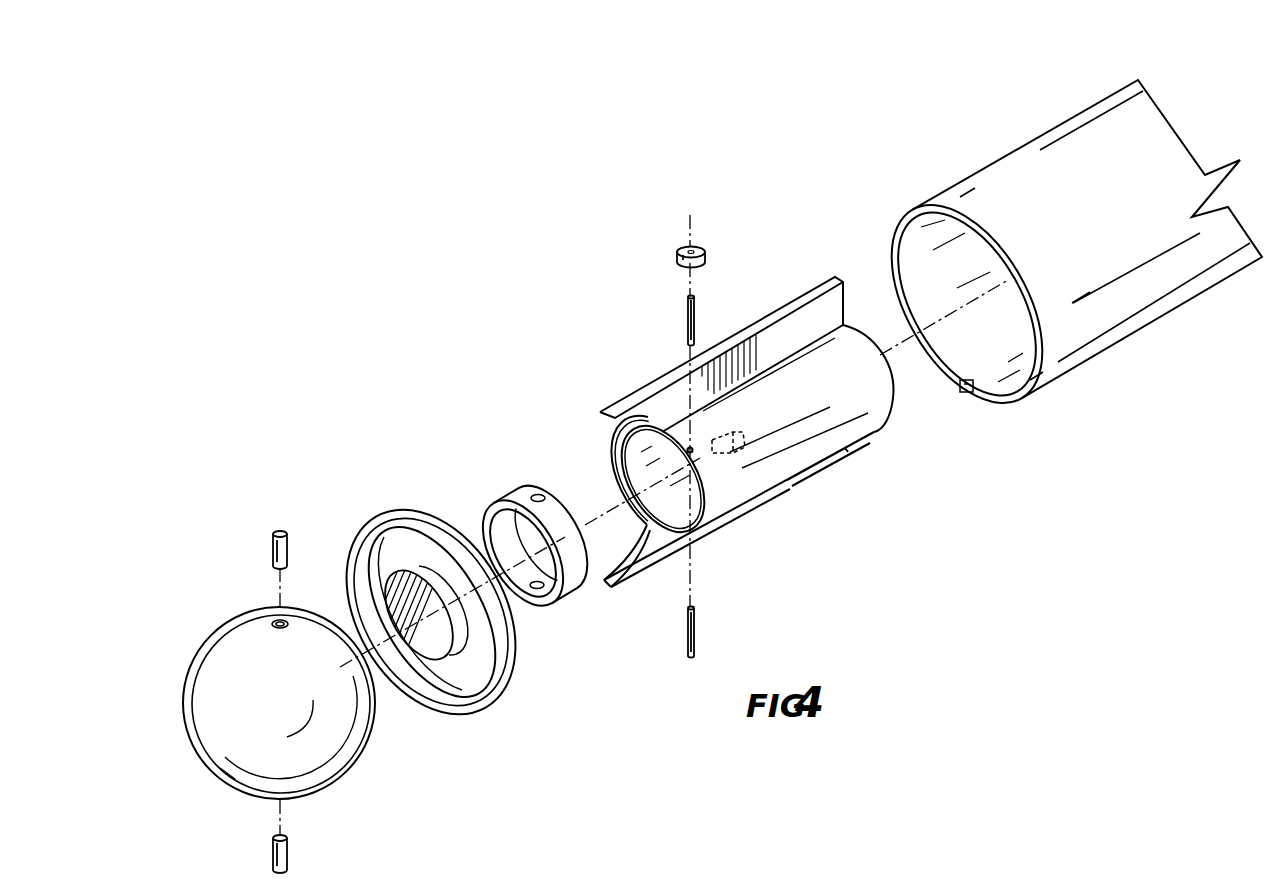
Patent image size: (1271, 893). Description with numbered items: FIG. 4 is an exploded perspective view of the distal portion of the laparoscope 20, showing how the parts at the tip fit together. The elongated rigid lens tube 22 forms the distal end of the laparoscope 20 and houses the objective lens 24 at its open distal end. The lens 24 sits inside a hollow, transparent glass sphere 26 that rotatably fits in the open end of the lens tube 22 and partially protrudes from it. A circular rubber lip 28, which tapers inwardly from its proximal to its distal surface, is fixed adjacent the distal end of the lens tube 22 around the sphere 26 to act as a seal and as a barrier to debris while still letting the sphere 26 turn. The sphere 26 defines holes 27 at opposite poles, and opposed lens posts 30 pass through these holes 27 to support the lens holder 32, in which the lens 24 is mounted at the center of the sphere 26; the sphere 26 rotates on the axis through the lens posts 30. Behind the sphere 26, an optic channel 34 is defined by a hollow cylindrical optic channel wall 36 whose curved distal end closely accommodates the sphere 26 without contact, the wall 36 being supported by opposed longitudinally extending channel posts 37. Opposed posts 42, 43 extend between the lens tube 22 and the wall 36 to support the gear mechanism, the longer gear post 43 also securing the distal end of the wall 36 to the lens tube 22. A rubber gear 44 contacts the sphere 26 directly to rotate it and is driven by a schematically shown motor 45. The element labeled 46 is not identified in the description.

The laparoscope 20 is at (422, 402).
The lens tube 22 is at (1013, 187).
The objective lens 24 is at (432, 655).
The glass sphere 26 is at (316, 645).
The holes 27 is at (287, 620).
The rubber lip 28 is at (470, 705).
The lens posts 30 is at (272, 545).
The lens holder 32 is at (540, 490).
The optic channel 34 is at (630, 487).
The optic channel wall 36 is at (857, 353).
The channel posts 37 is at (787, 330).
The post 42 is at (696, 320).
The longer gear post 43 is at (695, 635).
The rubber gear 44 is at (708, 262).
The motor 45 is at (745, 450).
The flange 46 is at (612, 435).